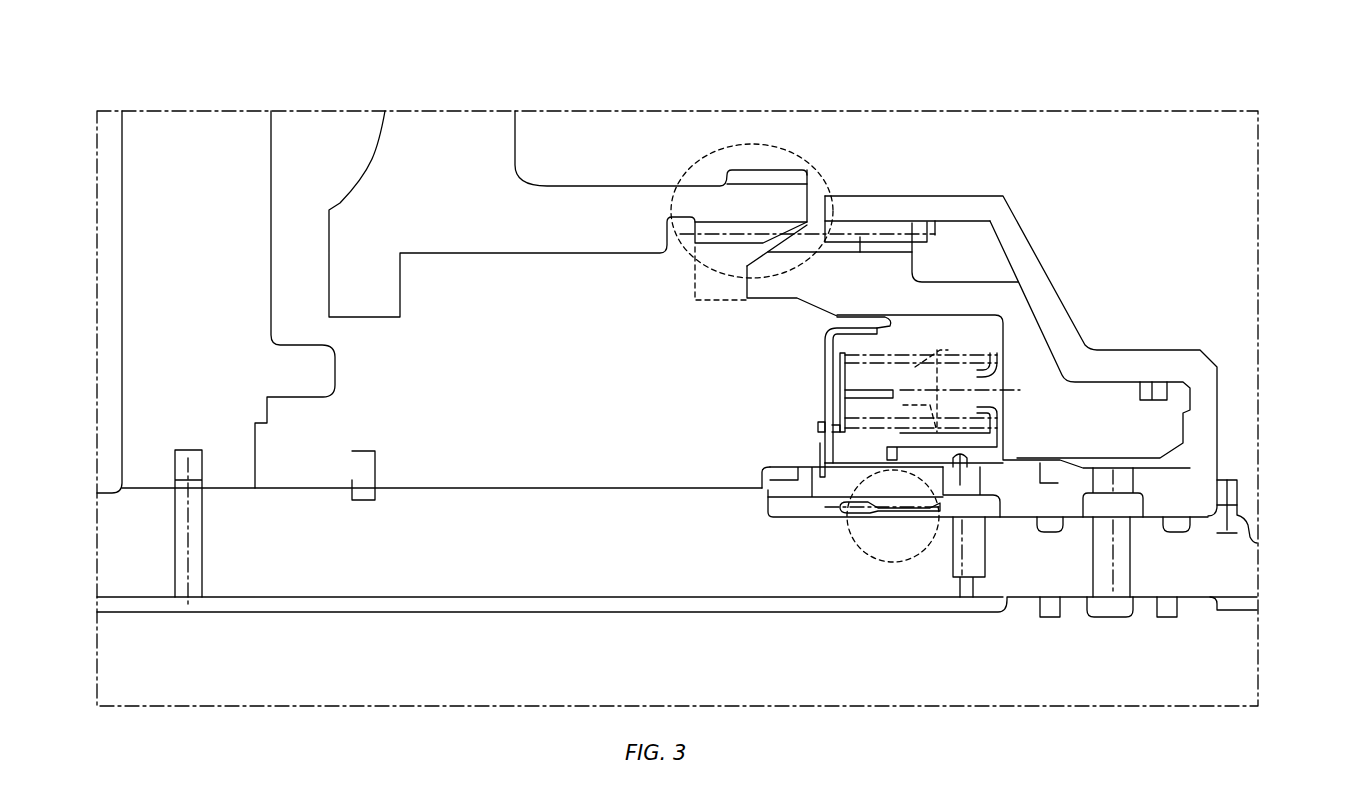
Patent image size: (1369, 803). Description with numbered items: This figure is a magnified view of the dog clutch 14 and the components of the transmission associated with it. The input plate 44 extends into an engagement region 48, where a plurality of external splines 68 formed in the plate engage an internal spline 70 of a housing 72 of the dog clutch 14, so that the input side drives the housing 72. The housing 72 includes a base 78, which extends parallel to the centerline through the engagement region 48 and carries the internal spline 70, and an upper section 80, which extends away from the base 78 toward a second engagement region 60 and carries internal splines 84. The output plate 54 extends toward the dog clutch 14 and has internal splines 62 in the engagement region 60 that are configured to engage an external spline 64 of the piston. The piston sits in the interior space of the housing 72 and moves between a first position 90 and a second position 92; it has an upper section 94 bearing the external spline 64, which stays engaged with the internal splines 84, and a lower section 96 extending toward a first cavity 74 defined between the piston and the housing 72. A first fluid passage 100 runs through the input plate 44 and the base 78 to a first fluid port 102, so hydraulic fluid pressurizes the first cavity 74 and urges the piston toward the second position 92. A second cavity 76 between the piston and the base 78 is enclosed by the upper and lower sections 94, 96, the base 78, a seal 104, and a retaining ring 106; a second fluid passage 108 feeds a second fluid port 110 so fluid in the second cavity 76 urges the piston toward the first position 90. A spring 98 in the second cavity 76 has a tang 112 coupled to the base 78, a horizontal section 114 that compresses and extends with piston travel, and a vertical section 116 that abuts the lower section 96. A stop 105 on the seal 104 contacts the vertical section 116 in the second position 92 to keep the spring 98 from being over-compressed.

The dog clutch 14 is at (958, 137).
The input plate 44 is at (440, 502).
The engagement region 48 is at (880, 560).
The output plate 54 is at (487, 190).
The engagement region 60 is at (778, 144).
The internal splines 62 is at (765, 233).
The external spline 64 is at (892, 233).
The external splines 68 is at (890, 445).
The internal spline 70 is at (863, 510).
The housing 72 is at (1127, 350).
The first cavity 74 is at (1180, 462).
The second cavity 76 is at (1020, 333).
The base 78 is at (1073, 477).
The upper section 80 is at (1037, 273).
The internal splines 84 is at (918, 233).
The first position 90 is at (785, 298).
The second position 92 is at (693, 286).
The upper section 94 is at (883, 270).
The lower section 96 is at (1148, 427).
The spring 98 is at (1018, 372).
The first fluid passage 100 is at (1100, 563).
The first fluid port 102 is at (1117, 460).
The seal 104 is at (830, 335).
The stop 105 is at (872, 397).
The retaining ring 106 is at (818, 430).
The second fluid passage 108 is at (985, 490).
The second fluid port 110 is at (962, 458).
The tang 112 is at (860, 455).
The horizontal section 114 is at (975, 430).
The vertical section 116 is at (1005, 378).